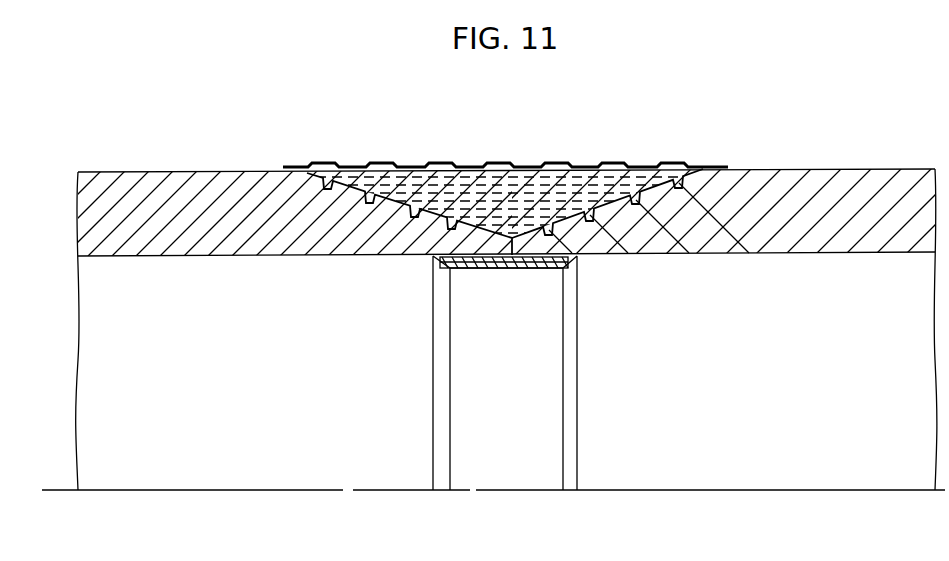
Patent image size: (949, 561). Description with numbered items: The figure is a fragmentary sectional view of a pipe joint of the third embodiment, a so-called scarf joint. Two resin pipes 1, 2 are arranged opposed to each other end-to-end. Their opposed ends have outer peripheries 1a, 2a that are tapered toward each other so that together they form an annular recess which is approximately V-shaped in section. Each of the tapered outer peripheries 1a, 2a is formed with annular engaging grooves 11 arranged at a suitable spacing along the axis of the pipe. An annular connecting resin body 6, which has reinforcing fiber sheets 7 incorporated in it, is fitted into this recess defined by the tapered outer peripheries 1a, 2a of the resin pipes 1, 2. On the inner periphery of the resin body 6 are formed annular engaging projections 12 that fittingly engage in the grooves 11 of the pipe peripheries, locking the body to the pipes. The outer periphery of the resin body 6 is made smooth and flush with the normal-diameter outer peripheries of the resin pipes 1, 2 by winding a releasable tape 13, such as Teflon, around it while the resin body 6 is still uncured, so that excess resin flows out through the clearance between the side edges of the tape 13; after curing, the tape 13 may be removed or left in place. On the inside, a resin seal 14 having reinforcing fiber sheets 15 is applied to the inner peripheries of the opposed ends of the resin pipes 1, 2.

The resin pipe 1 is at (168, 183).
The resin pipe 2 is at (850, 183).
The tapered outer periphery 1a is at (395, 206).
The tapered outer periphery 2a is at (606, 204).
The annular connecting resin body 6 is at (453, 190).
The reinforcing fiber sheets 7 is at (576, 195).
The annular engaging grooves 11 is at (323, 190).
The annular engaging projections 12 is at (371, 200).
The releasable tape 13 is at (640, 164).
The resin seal 14 is at (523, 270).
The reinforcing fiber sheets 15 is at (497, 270).